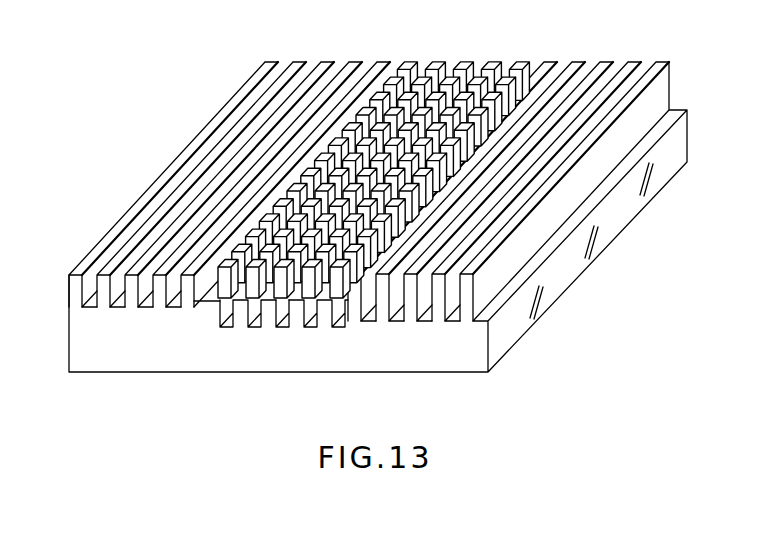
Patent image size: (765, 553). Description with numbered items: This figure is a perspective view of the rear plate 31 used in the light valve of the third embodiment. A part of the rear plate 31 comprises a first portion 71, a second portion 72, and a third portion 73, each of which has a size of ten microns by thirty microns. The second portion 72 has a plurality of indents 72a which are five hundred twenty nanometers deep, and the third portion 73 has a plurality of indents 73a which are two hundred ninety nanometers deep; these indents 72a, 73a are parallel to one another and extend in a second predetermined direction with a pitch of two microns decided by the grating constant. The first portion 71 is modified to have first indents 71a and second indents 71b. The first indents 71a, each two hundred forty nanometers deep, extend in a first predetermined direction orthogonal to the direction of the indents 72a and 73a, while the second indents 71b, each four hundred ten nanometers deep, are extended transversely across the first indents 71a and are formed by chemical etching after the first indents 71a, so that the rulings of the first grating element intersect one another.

The rear plate 31 is at (597, 235).
The first portion 71 is at (359, 219).
The first indents 71a is at (245, 278).
The second indents 71b is at (293, 330).
The second portion 72 is at (511, 219).
The indents 72a is at (425, 305).
The third portion 73 is at (233, 219).
The indents 73a is at (121, 293).